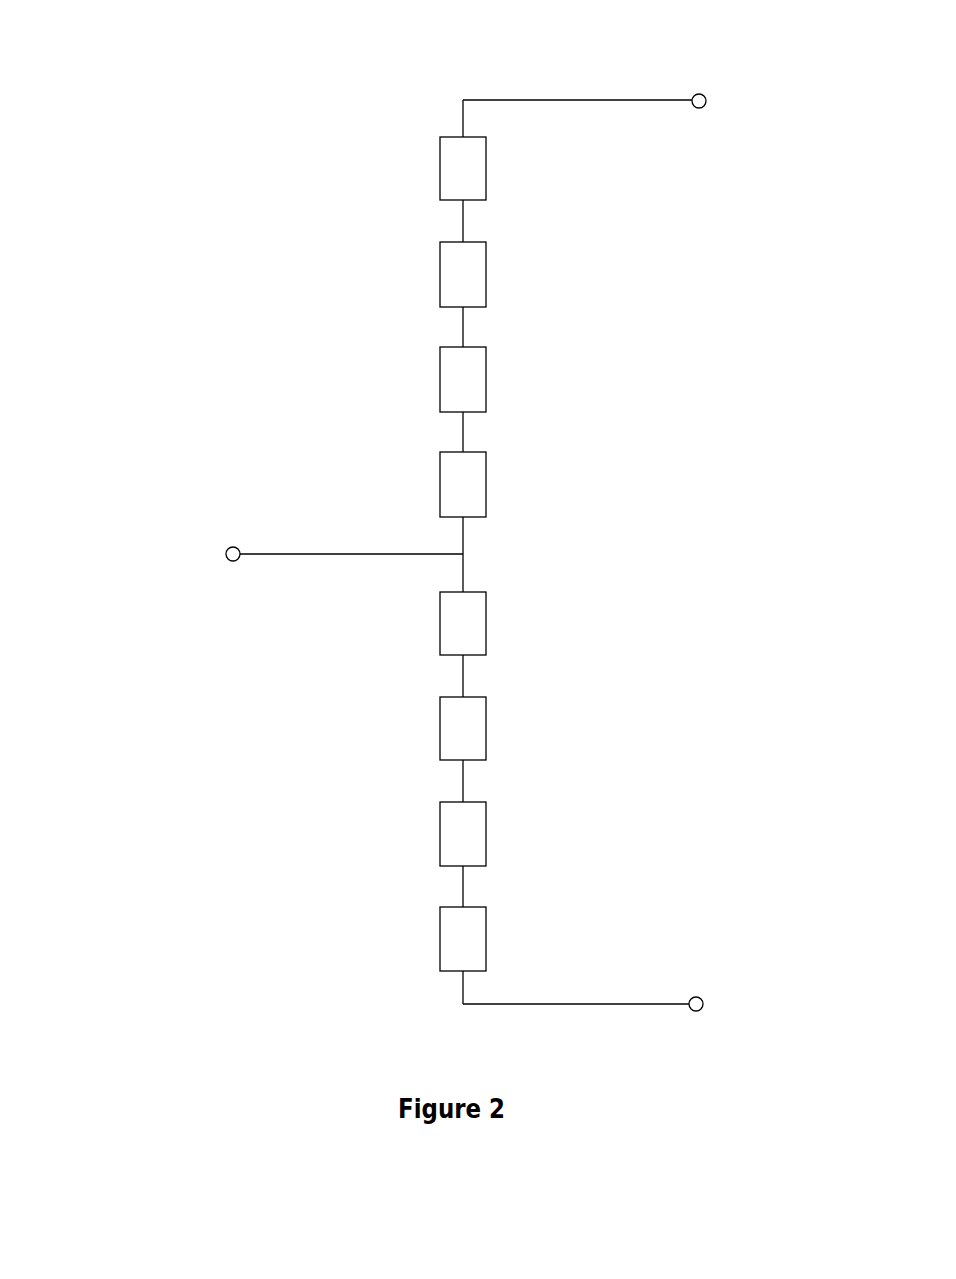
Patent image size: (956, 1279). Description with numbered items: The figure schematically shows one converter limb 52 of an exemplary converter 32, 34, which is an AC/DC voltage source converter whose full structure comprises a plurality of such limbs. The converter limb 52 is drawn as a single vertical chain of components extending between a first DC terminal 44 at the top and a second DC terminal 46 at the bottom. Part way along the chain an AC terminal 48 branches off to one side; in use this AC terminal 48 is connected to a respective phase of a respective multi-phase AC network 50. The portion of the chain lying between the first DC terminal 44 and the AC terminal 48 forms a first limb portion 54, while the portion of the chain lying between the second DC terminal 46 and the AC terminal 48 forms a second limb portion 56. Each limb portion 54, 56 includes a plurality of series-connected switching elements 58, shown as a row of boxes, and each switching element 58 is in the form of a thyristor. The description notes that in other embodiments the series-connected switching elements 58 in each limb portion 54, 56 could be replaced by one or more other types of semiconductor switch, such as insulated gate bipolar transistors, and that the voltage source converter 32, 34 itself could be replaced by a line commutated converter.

The converter 32 is at (436, 520).
The converter 34 is at (318, 214).
The first DC terminal 44 is at (704, 114).
The second DC terminal 46 is at (701, 986).
The AC terminal 48 is at (241, 544).
The multi-phase AC network 50 is at (215, 554).
The converter limb 52 is at (462, 90).
The first limb portion 54 is at (437, 333).
The second limb portion 56 is at (447, 778).
The switching element 58 is at (468, 175).